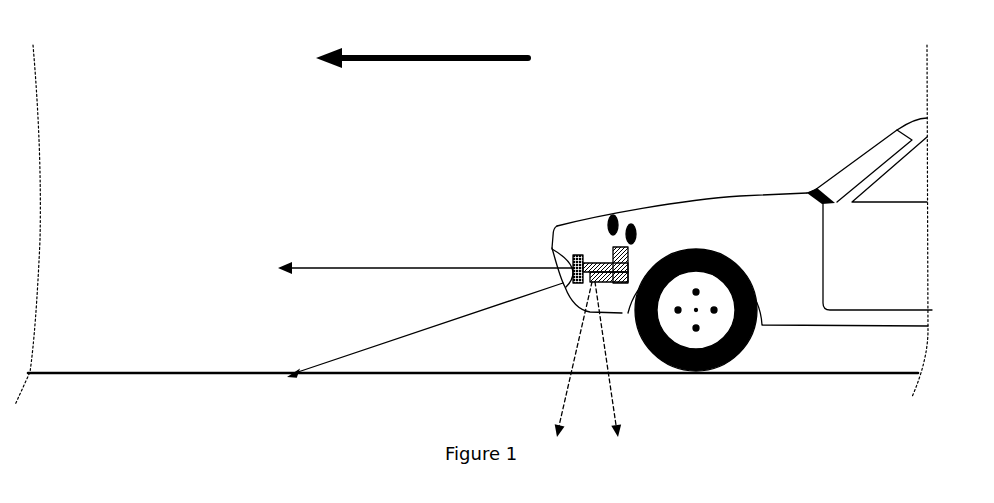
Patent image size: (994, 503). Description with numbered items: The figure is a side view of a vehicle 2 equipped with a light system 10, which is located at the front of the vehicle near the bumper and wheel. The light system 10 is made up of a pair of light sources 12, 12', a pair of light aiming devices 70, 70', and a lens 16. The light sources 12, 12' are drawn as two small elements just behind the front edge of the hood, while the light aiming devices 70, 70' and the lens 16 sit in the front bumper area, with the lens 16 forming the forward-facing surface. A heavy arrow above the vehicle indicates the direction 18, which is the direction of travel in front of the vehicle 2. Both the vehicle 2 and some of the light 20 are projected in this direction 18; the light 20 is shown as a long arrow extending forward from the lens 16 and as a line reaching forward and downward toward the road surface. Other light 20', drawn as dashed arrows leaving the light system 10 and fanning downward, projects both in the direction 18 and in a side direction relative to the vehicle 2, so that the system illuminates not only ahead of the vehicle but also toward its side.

The vehicle 2 is at (653, 202).
The light system 10 is at (508, 173).
The light source 12 is at (576, 180).
The light source 12' is at (600, 165).
The lens 16 is at (553, 248).
The direction 18 is at (481, 53).
The light 20 is at (425, 344).
The light 20' is at (588, 383).
The light aiming device 70 is at (576, 309).
The light aiming device 70' is at (633, 361).